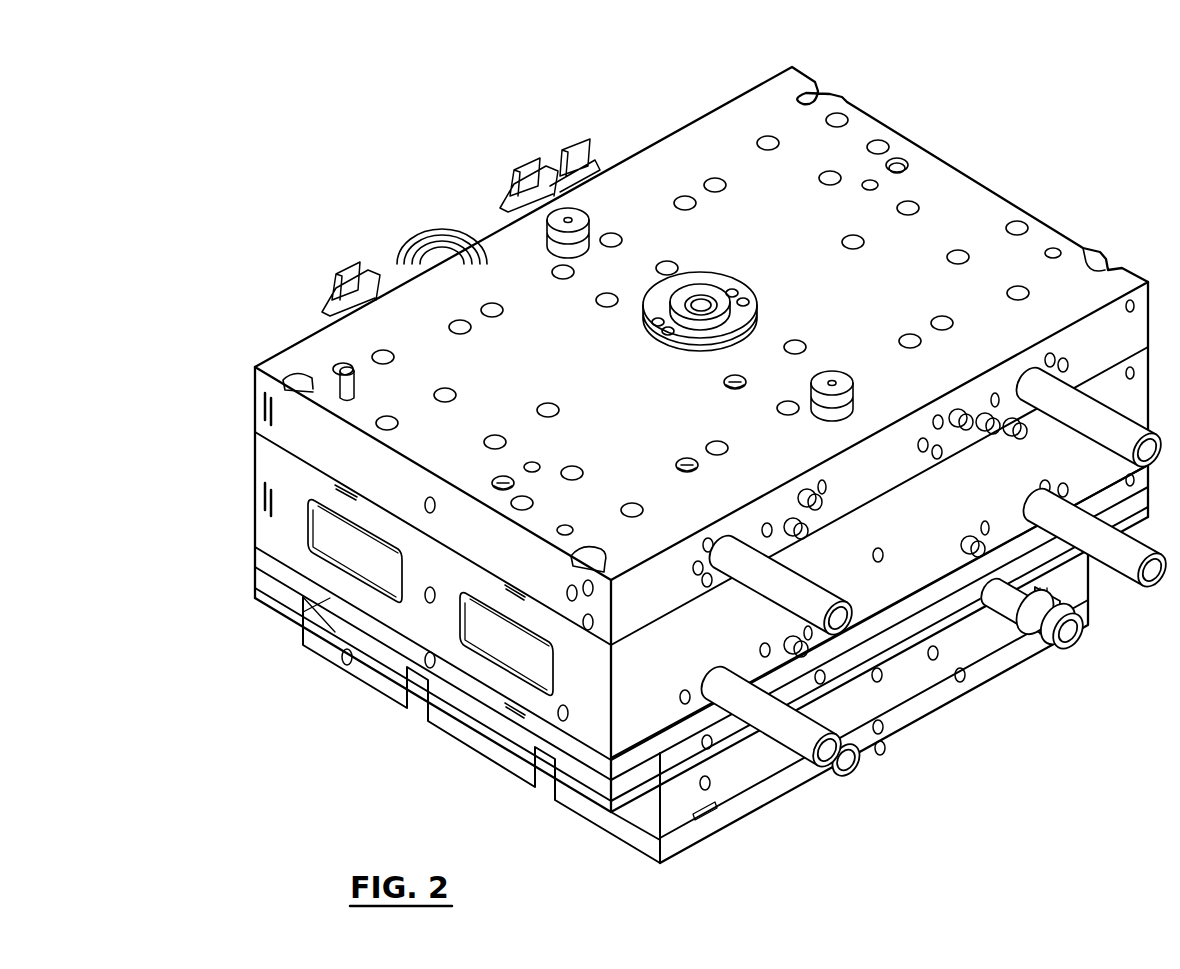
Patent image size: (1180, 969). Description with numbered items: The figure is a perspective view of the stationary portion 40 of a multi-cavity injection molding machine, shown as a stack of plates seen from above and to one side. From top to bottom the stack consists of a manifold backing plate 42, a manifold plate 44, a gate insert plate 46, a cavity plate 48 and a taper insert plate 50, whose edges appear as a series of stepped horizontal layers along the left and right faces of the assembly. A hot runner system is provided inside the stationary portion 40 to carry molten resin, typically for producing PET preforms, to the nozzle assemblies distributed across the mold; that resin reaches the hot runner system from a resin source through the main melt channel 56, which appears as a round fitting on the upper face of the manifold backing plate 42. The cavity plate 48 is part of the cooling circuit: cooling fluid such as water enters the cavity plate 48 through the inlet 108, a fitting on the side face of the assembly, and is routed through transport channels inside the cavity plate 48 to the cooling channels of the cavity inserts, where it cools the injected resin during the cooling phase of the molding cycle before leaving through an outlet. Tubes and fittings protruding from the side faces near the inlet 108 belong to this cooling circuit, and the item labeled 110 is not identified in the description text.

The stationary portion 40 is at (940, 96).
The manifold backing plate 42 is at (258, 400).
The manifold plate 44 is at (258, 493).
The gate insert plate 46 is at (258, 560).
The cavity plate 48 is at (680, 825).
The taper insert plate 50 is at (785, 800).
The main melt channel 56 is at (704, 306).
The inlet 108 is at (1080, 632).
The coolant tube 110 is at (862, 762).